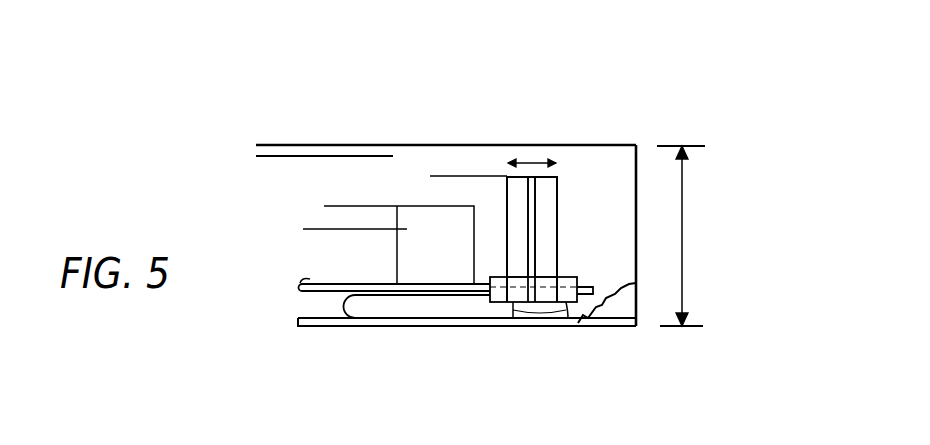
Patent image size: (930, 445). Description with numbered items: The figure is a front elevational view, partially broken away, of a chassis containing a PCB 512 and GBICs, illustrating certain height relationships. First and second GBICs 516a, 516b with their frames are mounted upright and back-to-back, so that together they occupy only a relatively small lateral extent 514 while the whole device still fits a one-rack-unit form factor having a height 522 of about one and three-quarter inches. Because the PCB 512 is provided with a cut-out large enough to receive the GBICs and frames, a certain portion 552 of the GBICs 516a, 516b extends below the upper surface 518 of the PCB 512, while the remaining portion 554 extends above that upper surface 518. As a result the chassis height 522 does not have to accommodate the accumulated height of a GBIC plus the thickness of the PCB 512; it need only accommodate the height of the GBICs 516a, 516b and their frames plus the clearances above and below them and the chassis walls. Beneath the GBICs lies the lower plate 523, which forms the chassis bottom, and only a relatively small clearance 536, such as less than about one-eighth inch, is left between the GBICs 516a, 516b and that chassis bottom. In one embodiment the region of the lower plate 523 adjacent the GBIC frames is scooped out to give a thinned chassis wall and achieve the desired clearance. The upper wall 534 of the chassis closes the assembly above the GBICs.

The PCB 512 is at (314, 283).
The lateral extent 514 is at (533, 160).
The first GBIC 516a is at (518, 204).
The second GBIC 516b is at (547, 248).
The upper surface 518 is at (342, 284).
The height 522 is at (684, 227).
The lower plate 523 is at (375, 327).
The housing top wall 534 is at (408, 145).
The clearance 536 is at (570, 320).
The portion 552 is at (519, 293).
The remaining portion 554 is at (527, 231).